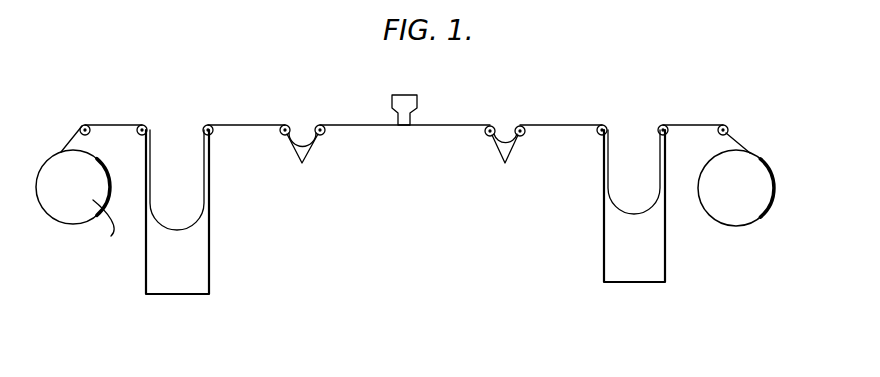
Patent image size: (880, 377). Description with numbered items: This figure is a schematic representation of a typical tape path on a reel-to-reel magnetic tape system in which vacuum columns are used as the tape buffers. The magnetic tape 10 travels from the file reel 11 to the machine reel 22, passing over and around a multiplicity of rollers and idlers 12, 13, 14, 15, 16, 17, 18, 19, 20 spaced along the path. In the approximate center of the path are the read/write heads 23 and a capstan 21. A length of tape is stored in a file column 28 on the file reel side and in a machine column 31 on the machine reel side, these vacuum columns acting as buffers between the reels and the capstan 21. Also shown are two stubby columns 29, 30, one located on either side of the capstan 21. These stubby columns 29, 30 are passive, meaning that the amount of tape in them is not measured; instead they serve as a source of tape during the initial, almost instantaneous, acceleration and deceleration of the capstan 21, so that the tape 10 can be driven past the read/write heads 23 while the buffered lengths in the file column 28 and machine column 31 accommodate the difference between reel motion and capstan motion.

The magnetic tape 10 is at (743, 139).
The file reel 11 is at (768, 207).
The roller 12 is at (722, 124).
The roller 13 is at (661, 124).
The roller 14 is at (600, 124).
The roller 15 is at (519, 125).
The roller 16 is at (488, 125).
The roller 17 is at (289, 124).
The roller 18 is at (206, 124).
The roller 19 is at (148, 124).
The roller 20 is at (83, 123).
The capstan 21 is at (316, 124).
The machine reel 22 is at (38, 174).
The read/write heads 23 is at (410, 95).
The file column 28 is at (665, 270).
The stubby column 29 is at (513, 146).
The stubby column 30 is at (311, 147).
The machine column 31 is at (209, 268).